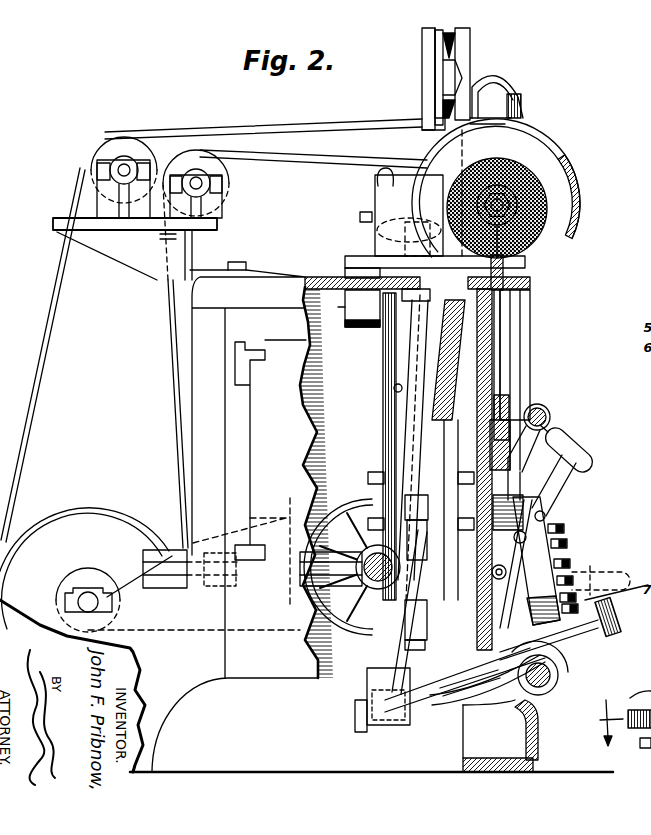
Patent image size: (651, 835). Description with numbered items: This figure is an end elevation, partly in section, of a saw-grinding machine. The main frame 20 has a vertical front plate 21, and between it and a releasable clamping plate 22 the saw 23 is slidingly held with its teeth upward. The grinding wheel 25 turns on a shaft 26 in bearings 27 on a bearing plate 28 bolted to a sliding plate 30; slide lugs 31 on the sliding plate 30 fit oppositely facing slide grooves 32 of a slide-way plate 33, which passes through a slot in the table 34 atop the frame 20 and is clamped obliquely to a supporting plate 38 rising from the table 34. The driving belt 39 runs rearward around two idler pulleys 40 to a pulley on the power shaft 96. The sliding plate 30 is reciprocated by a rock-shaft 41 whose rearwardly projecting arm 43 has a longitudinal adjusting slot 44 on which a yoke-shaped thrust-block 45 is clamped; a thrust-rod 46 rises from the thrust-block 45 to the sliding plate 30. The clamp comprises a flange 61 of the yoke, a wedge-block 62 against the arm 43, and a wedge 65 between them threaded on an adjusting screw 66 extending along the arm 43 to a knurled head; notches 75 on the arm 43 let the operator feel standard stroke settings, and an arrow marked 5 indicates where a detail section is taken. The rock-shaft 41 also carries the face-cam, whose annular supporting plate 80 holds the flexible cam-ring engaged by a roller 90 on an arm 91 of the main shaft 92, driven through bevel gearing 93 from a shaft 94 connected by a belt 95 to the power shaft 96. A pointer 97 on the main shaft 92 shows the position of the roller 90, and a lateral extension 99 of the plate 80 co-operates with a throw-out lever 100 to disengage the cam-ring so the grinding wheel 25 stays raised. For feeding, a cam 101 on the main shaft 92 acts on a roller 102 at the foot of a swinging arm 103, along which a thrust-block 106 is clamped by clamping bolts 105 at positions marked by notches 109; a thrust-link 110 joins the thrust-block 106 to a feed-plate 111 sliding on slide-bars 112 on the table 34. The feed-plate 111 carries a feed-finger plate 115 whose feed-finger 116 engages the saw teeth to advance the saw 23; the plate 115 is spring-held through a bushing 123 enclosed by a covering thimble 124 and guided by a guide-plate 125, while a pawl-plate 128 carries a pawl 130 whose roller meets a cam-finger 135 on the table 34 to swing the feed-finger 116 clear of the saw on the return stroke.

The main frame 20 is at (200, 680).
The front plate 21 is at (512, 370).
The releasable clamping plate 22 is at (530, 330).
The saw 23 is at (500, 302).
The grinding wheel 25 is at (548, 226).
The carrying shaft 26 is at (538, 142).
The bearings 27 is at (527, 112).
The bearing plate 28 is at (502, 82).
The sliding plate 30 is at (457, 75).
The slide lugs 31 is at (448, 66).
The slide grooves 32 is at (443, 40).
The slide-way plate 33 is at (456, 30).
The table 34 is at (316, 277).
The supporting plate 38 is at (422, 88).
The driving belt 39 is at (256, 131).
The idler pulleys 40 is at (100, 153).
The rock-shaft 41 is at (544, 695).
The arm 43 is at (496, 718).
The adjusting slot 44 is at (432, 712).
The thrust-block 45 is at (393, 700).
The thrust-rod 46 is at (518, 430).
The flange 61 is at (385, 724).
The wedge-block 62 is at (650, 745).
The wedge 65 is at (634, 698).
The adjusting screw 66 is at (588, 632).
The notches 75 is at (452, 700).
The supporting plate 80 is at (548, 520).
The roller 90 is at (478, 643).
The arm 91 is at (522, 592).
The main shaft 92 is at (268, 588).
The bevel gearing 93 is at (362, 640).
The shaft 94 is at (305, 607).
The belt 95 is at (120, 582).
The power shaft 96 is at (92, 590).
The pointer 97 is at (578, 568).
The lateral extension 99 is at (575, 552).
The throw-out lever 100 is at (562, 487).
The cam 101 is at (418, 642).
The roller 102 is at (428, 622).
The swinging arm 103 is at (385, 432).
The clamping bolts 105 is at (455, 500).
The thrust-block 106 is at (405, 485).
The notches 109 is at (394, 388).
The thrust-link 110 is at (418, 400).
The feed-plate 111 is at (508, 203).
The slide-bars 112 is at (540, 262).
The feed-finger plate 115 is at (352, 256).
The feed-finger 116 is at (448, 266).
The bushing 123 is at (418, 355).
The covering thimble 124 is at (412, 210).
The guide-plate 125 is at (378, 183).
The pawl-plate 128 is at (365, 212).
The pawl 130 is at (350, 268).
The cam-finger 135 is at (383, 333).
The section arrow 5 is at (604, 723).